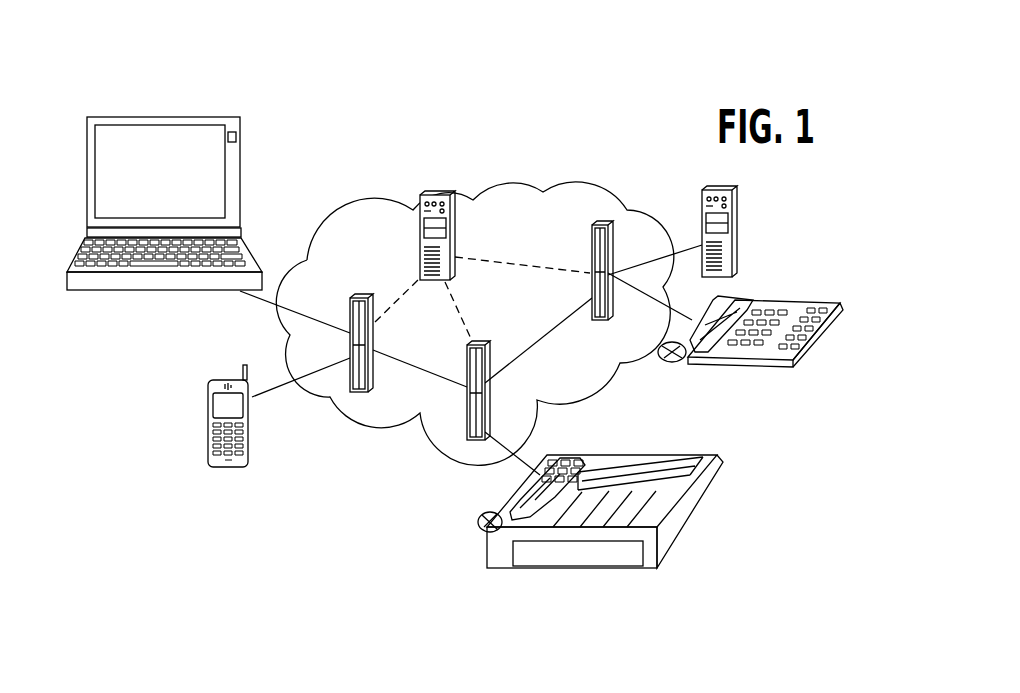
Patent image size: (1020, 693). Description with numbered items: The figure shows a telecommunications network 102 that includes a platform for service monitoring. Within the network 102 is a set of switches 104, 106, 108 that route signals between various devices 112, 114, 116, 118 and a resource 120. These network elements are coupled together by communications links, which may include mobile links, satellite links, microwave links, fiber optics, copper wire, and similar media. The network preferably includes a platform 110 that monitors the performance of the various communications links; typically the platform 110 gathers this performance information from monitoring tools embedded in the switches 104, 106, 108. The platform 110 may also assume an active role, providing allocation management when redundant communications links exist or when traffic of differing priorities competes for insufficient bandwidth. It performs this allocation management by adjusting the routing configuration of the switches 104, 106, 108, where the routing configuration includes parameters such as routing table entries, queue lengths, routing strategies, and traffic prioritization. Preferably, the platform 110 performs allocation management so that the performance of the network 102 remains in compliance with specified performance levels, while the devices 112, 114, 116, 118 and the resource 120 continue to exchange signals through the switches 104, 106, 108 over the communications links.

The telecommunications network 102 is at (380, 432).
The switch 104 is at (344, 335).
The switch 106 is at (467, 424).
The switch 108 is at (593, 253).
The platform 110 is at (463, 222).
The device 112 is at (106, 284).
The device 114 is at (208, 434).
The device 116 is at (530, 567).
The device 118 is at (718, 360).
The resource 120 is at (747, 250).